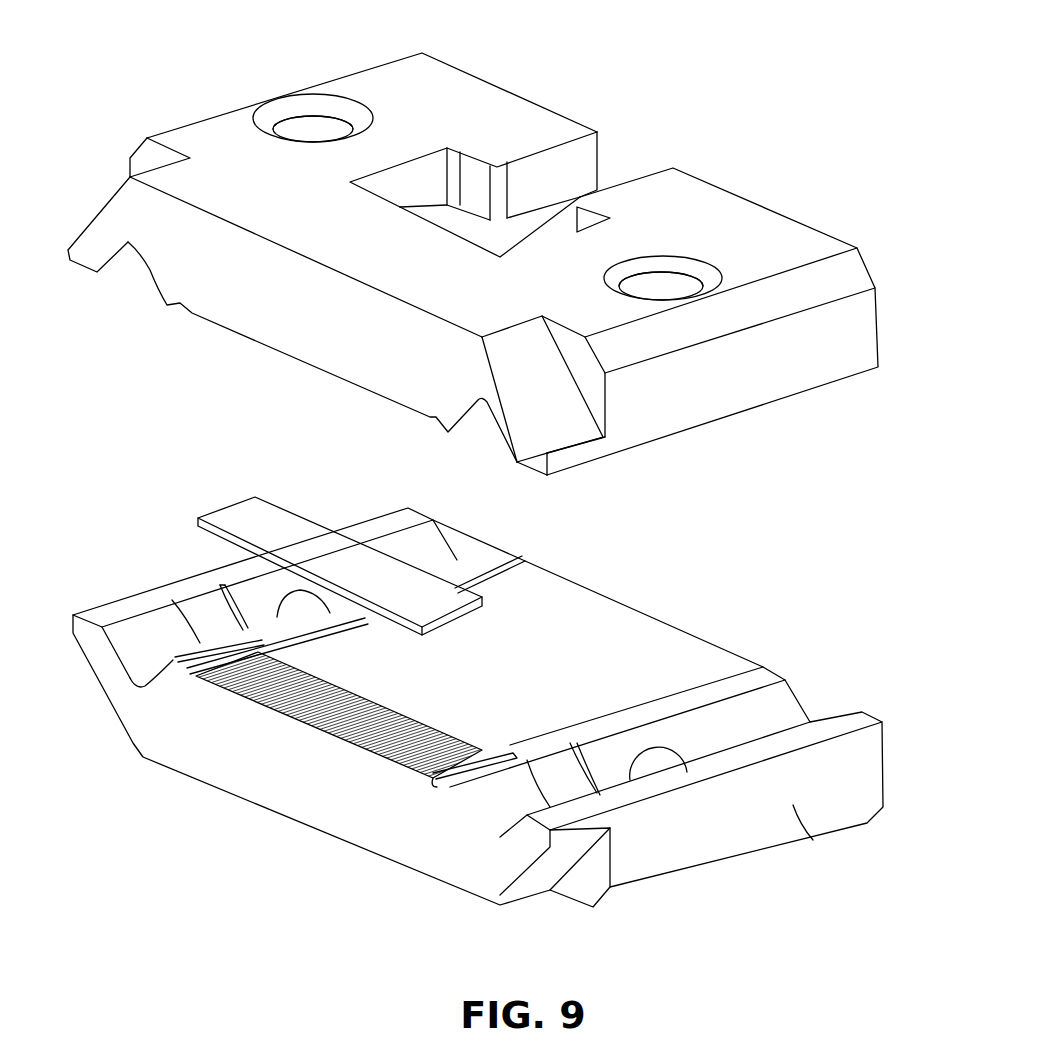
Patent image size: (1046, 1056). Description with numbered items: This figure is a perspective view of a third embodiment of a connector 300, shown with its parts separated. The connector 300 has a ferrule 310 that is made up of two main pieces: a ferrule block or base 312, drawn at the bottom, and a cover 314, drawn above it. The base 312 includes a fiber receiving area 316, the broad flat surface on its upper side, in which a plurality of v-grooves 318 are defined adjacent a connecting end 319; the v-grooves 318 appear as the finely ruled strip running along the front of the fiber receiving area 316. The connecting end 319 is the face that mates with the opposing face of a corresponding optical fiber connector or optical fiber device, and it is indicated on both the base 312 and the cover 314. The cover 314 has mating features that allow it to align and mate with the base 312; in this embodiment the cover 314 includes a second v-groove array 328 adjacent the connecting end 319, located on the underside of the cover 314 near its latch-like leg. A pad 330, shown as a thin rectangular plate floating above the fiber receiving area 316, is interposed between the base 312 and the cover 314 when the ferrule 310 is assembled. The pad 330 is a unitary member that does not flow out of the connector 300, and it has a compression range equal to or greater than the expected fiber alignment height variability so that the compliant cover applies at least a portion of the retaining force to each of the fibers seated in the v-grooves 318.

The connector 300 is at (662, 68).
The ferrule 310 is at (775, 585).
The base 312 is at (793, 805).
The cover 314 is at (722, 222).
The fiber receiving area 316 is at (492, 665).
The v-grooves 318 is at (308, 722).
The connecting end 319 is at (148, 222).
The second v-groove array 328 is at (222, 333).
The pad 330 is at (238, 508).